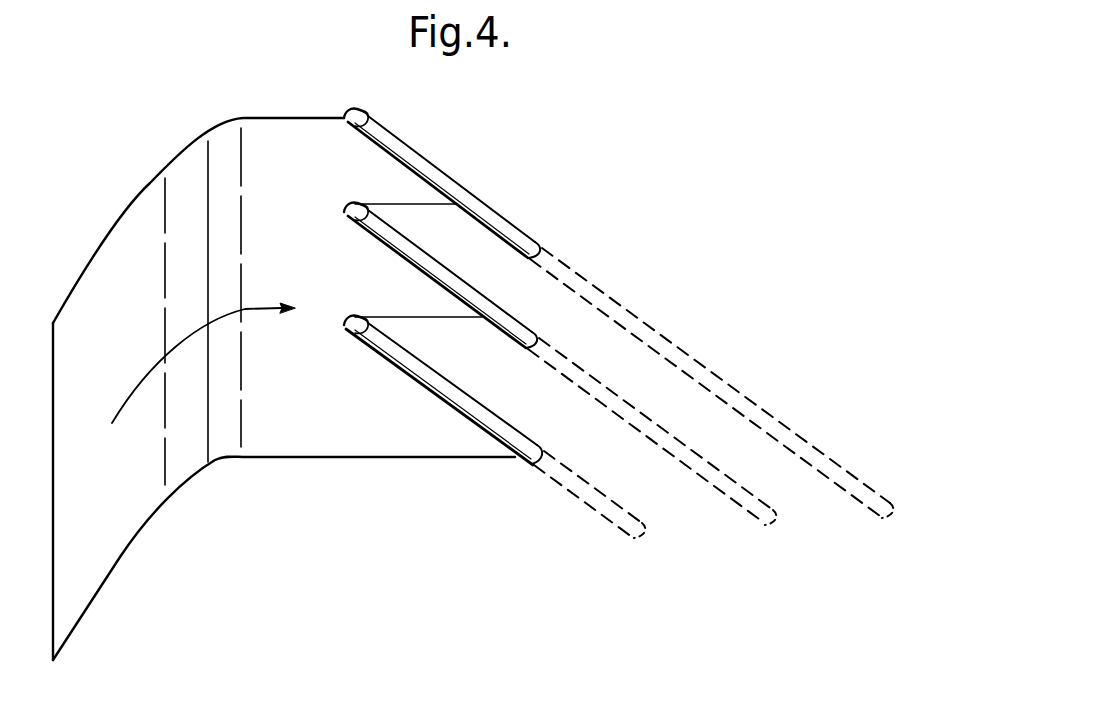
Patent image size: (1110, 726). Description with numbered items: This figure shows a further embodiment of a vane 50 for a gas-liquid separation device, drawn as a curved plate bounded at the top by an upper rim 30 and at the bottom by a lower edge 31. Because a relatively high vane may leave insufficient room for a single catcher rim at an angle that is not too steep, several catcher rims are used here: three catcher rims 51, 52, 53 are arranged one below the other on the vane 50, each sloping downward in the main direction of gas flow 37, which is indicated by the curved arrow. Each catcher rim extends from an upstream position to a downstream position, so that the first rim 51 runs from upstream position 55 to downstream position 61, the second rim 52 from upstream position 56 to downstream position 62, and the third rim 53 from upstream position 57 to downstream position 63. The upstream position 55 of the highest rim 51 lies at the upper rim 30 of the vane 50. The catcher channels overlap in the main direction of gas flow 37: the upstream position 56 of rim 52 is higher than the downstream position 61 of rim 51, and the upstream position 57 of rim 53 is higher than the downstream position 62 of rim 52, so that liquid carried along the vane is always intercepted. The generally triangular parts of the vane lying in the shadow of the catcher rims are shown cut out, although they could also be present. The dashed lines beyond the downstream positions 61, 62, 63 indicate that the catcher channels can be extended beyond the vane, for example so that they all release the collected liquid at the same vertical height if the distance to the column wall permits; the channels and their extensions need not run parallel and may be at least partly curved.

The upper rim 30 is at (290, 117).
The lower surface of body 31 is at (330, 458).
The main direction of gas flow 37 is at (197, 325).
The vane 50 is at (433, 458).
The catcher rim 51 is at (453, 178).
The catcher rim 52 is at (424, 250).
The catcher rim 53 is at (455, 384).
The upstream position 55 is at (364, 107).
The upstream position 56 is at (350, 203).
The upstream position 57 is at (352, 317).
The downstream position 61 is at (540, 240).
The downstream position 62 is at (540, 338).
The downstream position 63 is at (540, 456).